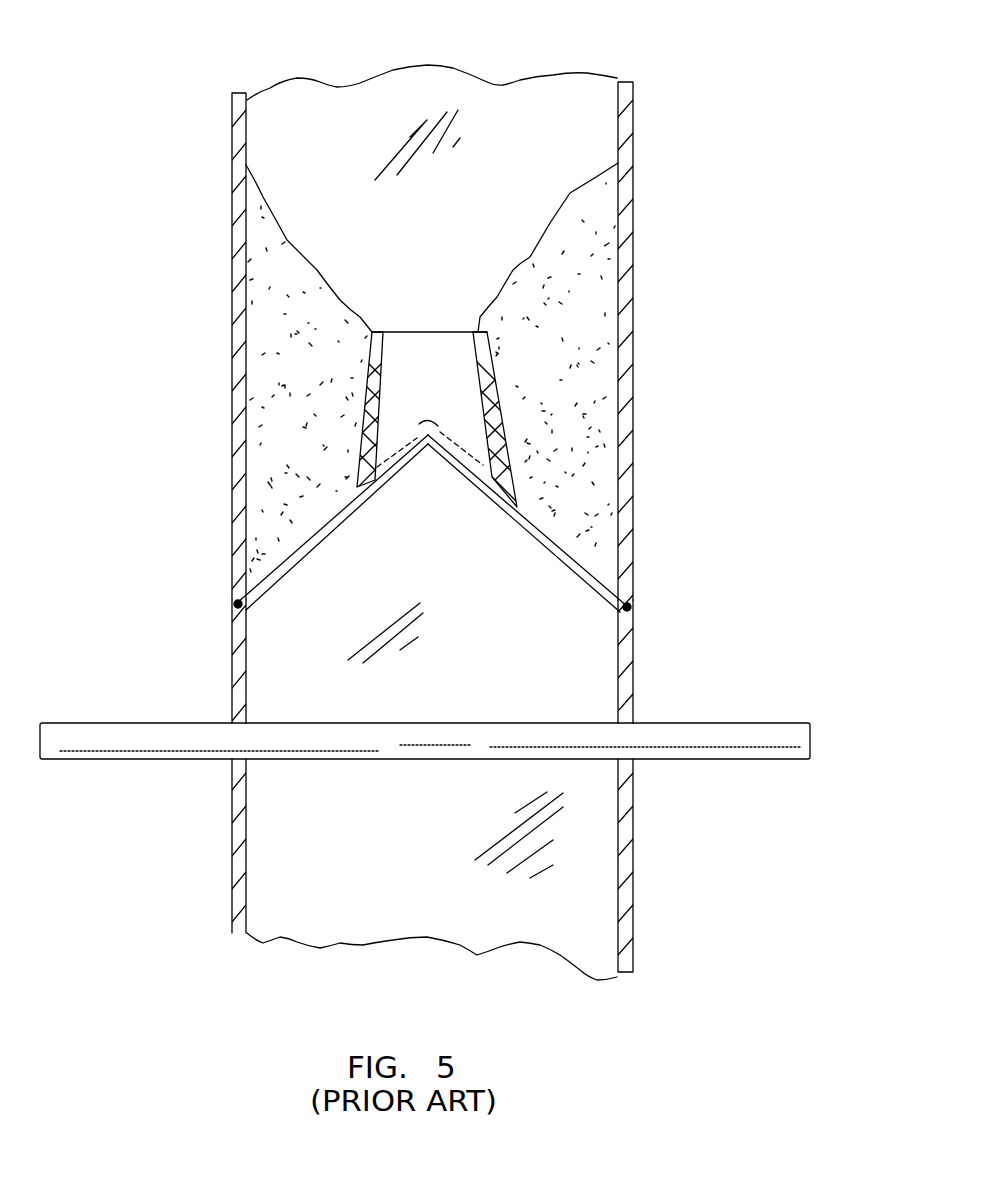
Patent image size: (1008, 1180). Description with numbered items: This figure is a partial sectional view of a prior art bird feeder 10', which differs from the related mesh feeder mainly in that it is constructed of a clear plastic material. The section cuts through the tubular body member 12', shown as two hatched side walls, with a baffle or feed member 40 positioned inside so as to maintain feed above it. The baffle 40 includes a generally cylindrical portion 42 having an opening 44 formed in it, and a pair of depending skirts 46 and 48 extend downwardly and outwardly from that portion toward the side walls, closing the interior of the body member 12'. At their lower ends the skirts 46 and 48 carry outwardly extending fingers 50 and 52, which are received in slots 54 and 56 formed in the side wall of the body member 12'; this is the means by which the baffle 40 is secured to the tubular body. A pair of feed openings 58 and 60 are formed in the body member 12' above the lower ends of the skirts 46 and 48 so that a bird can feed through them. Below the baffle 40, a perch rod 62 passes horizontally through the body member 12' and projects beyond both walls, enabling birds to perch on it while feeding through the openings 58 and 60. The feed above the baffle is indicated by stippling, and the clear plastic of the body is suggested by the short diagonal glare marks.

The bird feeder 10' is at (513, 502).
The body member 12' is at (496, 536).
The baffle 40 is at (485, 516).
The cylindrical portion 42 is at (493, 398).
The opening 44 is at (540, 380).
The depending skirt 46 is at (317, 547).
The depending skirt 48 is at (545, 543).
The outwardly extending finger 50 is at (247, 608).
The outwardly extending finger 52 is at (617, 610).
The slot 54 is at (232, 598).
The slot 56 is at (633, 602).
The feed opening 58 is at (233, 515).
The feed opening 60 is at (633, 515).
The perch rod 62 is at (697, 723).